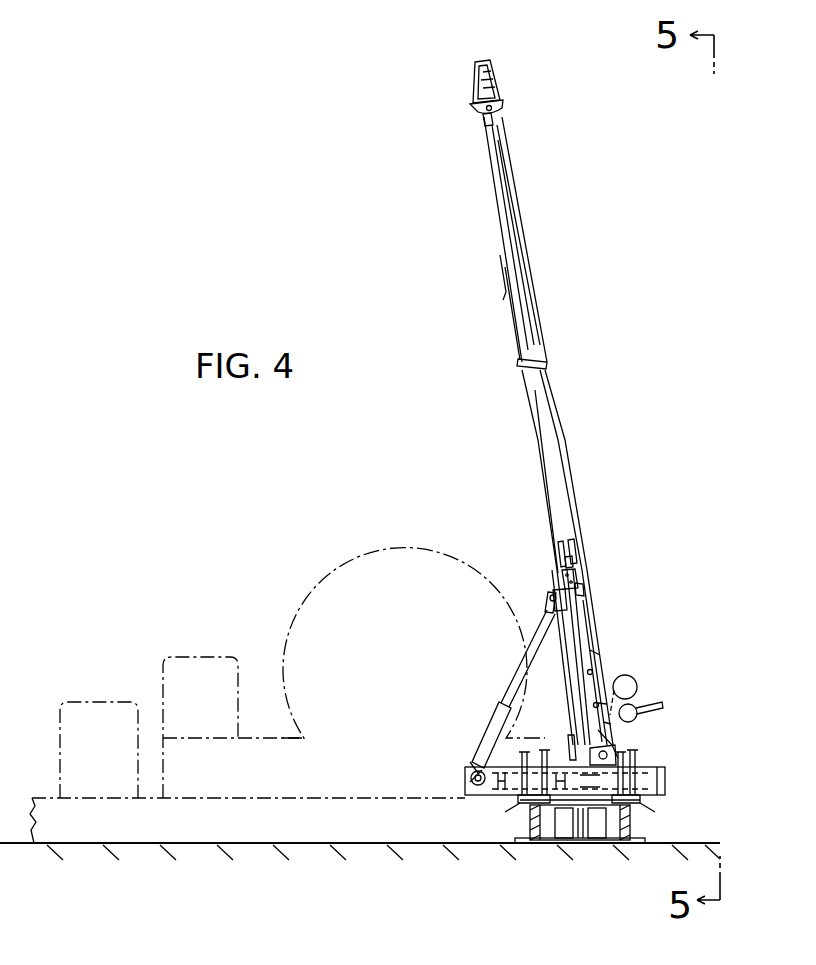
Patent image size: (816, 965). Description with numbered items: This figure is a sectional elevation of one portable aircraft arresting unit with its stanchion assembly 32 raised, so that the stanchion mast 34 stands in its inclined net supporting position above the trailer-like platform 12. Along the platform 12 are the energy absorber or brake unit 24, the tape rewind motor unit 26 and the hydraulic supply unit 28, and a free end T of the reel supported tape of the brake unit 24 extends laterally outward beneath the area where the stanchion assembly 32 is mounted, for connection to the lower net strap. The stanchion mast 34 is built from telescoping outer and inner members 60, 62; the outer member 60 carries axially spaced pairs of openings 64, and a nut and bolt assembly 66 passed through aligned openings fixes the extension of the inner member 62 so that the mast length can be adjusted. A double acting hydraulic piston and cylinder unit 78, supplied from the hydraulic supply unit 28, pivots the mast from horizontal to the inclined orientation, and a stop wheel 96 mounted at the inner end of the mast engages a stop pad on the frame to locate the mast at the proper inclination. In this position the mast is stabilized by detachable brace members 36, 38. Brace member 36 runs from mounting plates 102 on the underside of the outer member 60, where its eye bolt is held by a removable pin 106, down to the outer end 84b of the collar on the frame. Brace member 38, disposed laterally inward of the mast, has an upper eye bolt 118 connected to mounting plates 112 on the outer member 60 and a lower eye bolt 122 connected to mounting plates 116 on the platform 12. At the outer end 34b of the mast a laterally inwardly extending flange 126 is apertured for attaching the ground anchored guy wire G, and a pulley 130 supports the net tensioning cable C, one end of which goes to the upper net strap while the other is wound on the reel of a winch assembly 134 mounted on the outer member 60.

The platform 12 is at (236, 798).
The energy absorber or brake unit 24 is at (345, 575).
The tape rewind motor unit 26 is at (198, 668).
The hydraulic supply unit 28 is at (84, 716).
The stanchion assembly 32 is at (664, 534).
The stanchion mast 34 is at (579, 461).
The outer end 34b is at (482, 120).
The brace member 36 is at (502, 698).
The brace member 38 is at (577, 632).
The outer member 60 is at (545, 442).
The inner member 62 is at (523, 328).
The openings 64 is at (588, 670).
The nut and bolt assembly 66 is at (578, 590).
The hydraulic piston and cylinder unit 78 is at (512, 793).
The outer end of collar 84b is at (470, 778).
The stop wheel 96 is at (628, 764).
The mounting plates 102 is at (557, 593).
The removable pin 106 is at (547, 596).
The mounting plates 112 is at (560, 555).
The mounting plates 116 is at (610, 745).
The eye bolt 118 is at (575, 563).
The eye bolt 122 is at (572, 750).
The flange 126 is at (499, 109).
The pulley 130 is at (490, 77).
The winch assembly 134 is at (649, 687).
The net tensioning cable C is at (515, 185).
The guy wire G is at (502, 290).
The tape free end T is at (593, 823).